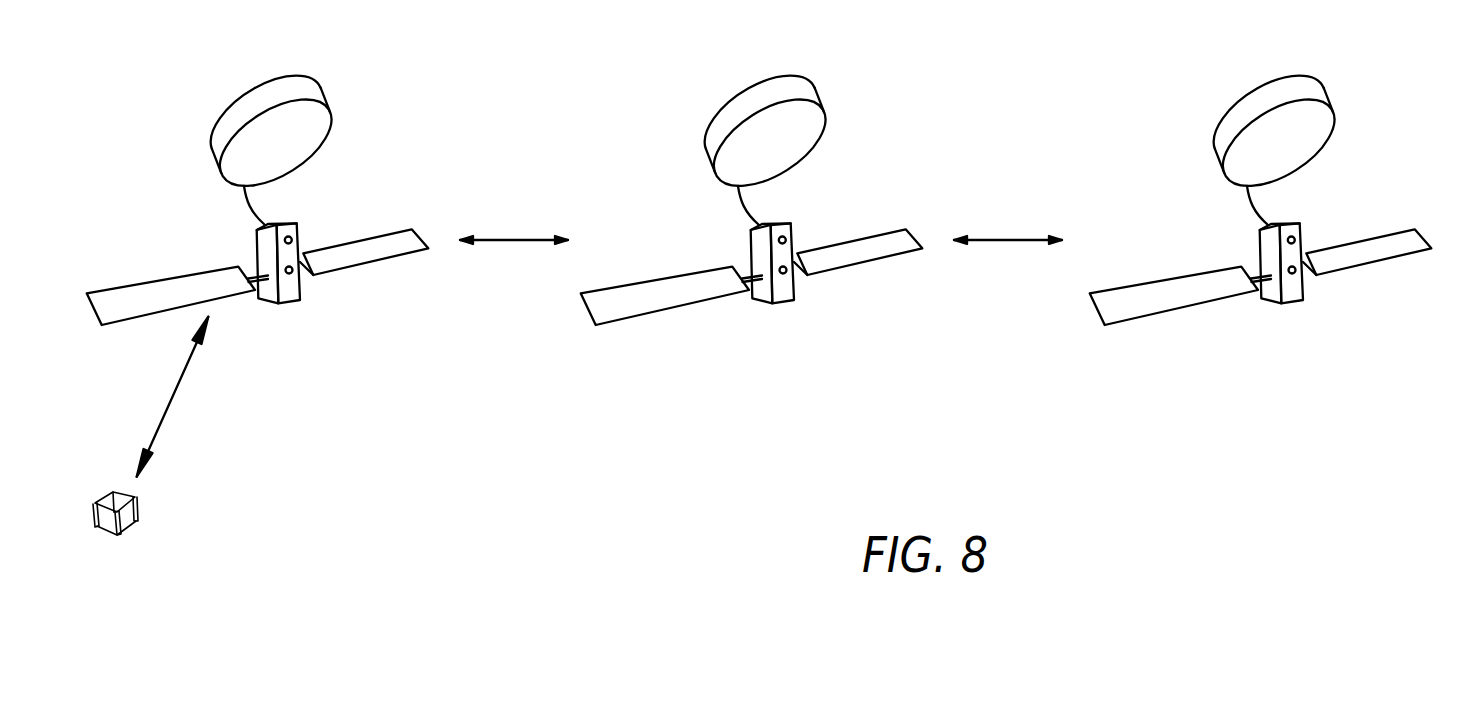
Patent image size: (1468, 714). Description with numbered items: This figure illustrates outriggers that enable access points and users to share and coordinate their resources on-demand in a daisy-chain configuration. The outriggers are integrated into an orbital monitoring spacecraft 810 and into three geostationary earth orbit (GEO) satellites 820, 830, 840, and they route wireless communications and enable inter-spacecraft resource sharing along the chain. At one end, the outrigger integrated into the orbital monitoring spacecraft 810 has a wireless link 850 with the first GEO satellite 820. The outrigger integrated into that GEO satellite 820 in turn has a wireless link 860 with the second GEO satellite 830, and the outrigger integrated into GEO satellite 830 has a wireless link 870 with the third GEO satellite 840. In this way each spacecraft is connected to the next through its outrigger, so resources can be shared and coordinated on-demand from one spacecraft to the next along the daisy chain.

The orbital monitoring spacecraft 810 is at (163, 508).
The geostationary earth orbit (GEO) satellite 820 is at (336, 204).
The geostationary earth orbit (GEO) satellite 830 is at (762, 200).
The geostationary earth orbit (GEO) satellite 840 is at (1271, 200).
The wireless link 850 is at (177, 387).
The wireless link 860 is at (513, 240).
The wireless link 870 is at (1008, 240).